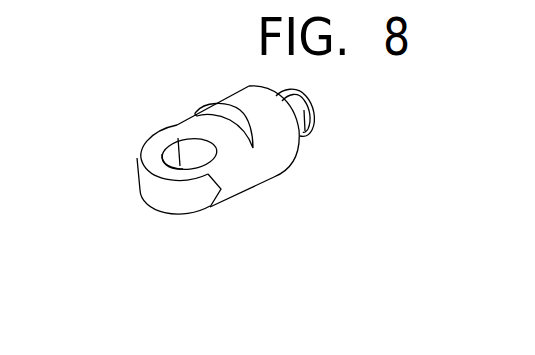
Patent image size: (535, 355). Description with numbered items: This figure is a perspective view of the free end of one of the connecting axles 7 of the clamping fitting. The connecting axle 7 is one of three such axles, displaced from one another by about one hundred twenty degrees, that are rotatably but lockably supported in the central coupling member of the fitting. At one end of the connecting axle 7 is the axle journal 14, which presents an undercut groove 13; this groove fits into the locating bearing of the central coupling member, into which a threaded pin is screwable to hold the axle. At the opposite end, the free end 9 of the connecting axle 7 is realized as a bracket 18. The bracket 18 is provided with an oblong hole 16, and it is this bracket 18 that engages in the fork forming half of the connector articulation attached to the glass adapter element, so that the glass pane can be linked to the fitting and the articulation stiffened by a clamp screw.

The connecting axle 7 is at (267, 151).
The free end 9 is at (161, 243).
The undercut groove 13 is at (300, 136).
The axle journal 14 is at (313, 124).
The oblong hole 16 is at (197, 147).
The bracket 18 is at (180, 128).